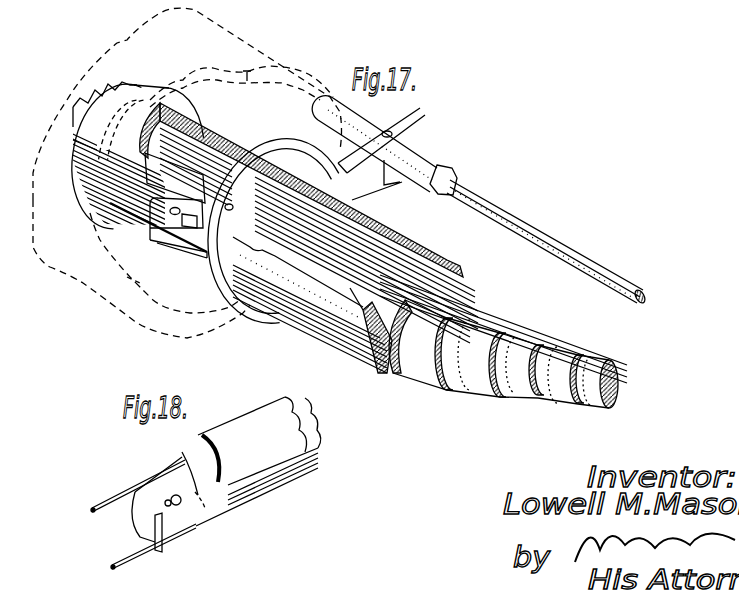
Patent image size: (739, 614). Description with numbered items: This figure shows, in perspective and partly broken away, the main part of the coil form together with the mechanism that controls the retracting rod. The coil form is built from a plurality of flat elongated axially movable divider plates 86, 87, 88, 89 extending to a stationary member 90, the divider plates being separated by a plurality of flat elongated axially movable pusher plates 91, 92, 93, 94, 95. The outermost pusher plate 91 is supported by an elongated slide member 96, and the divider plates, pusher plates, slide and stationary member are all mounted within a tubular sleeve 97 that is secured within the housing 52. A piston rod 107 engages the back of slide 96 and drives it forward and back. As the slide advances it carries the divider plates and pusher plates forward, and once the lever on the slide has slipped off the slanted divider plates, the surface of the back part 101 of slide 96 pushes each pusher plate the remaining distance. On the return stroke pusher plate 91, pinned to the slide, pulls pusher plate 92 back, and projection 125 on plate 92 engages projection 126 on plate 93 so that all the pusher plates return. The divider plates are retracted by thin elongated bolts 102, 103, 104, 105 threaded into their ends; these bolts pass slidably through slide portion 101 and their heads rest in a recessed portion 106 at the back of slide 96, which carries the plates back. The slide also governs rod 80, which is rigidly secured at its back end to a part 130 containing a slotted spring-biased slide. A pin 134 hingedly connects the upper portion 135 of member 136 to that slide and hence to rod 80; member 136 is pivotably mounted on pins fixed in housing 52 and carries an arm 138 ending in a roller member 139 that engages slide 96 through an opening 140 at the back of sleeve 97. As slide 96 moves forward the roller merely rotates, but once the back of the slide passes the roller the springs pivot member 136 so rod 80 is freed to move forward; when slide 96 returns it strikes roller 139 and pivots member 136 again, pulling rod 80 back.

In FIG. 17, the housing 52 is at (132, 36).
In FIG. 17, the rod 80 is at (590, 272).
In FIG. 17, the divider plate 86 is at (457, 387).
In FIG. 18, the divider plate 86 is at (197, 453).
In FIG. 17, the divider plate 87 is at (510, 392).
In FIG. 17, the divider plate 88 is at (550, 400).
In FIG. 17, the divider plate 89 is at (590, 403).
In FIG. 17, the stationary member 90 is at (615, 382).
In FIG. 17, the pusher plate 91 is at (425, 365).
In FIG. 18, the pusher plate 91 is at (229, 435).
In FIG. 17, the pusher plate 92 is at (470, 390).
In FIG. 18, the pusher plate 92 is at (153, 487).
In FIG. 17, the pusher plate 93 is at (523, 395).
In FIG. 17, the pusher plate 94 is at (570, 400).
In FIG. 17, the pusher plate 95 is at (603, 403).
In FIG. 17, the slide member 96 is at (350, 288).
In FIG. 17, the tubular sleeve 97 is at (128, 183).
In FIG. 17, the back part of slide 101 is at (157, 156).
In FIG. 17, the bolt 102 is at (173, 117).
In FIG. 18, the bolt 102 is at (102, 506).
In FIG. 17, the bolt 103 is at (190, 130).
In FIG. 17, the bolt 104 is at (197, 140).
In FIG. 17, the bolt 105 is at (225, 152).
In FIG. 17, the recessed portion 106 is at (88, 112).
In FIG. 17, the piston rod 107 is at (76, 118).
In FIG. 18, the projection 125 is at (180, 503).
In FIG. 18, the projection 126 is at (170, 513).
In FIG. 17, the part 130 is at (420, 160).
In FIG. 17, the pin 134 is at (395, 128).
In FIG. 17, the upper portion 135 is at (395, 139).
In FIG. 17, the member 136 is at (287, 143).
In FIG. 17, the arm 138 is at (185, 257).
In FIG. 17, the roller member 139 is at (177, 237).
In FIG. 17, the opening 140 is at (165, 194).